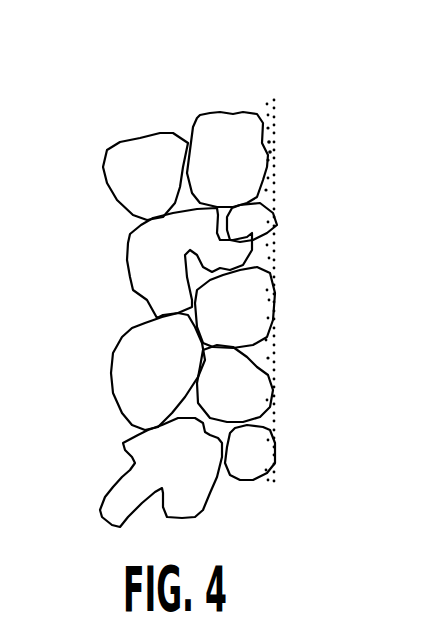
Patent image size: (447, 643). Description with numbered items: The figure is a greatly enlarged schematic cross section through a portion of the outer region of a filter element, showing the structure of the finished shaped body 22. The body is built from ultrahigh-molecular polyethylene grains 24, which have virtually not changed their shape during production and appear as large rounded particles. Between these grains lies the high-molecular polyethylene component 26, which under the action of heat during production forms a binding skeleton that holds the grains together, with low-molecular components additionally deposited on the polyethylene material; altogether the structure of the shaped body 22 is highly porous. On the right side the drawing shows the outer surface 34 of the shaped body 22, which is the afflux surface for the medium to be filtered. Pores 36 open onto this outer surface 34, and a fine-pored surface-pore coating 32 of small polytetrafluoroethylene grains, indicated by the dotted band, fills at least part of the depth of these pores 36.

The shaped body 22 is at (192, 82).
The ultrahigh-molecular polyethylene grains 24 is at (117, 168).
The high-molecular polyethylene component 26 is at (145, 265).
The surface-pore coating 32 is at (258, 197).
The outer surface 34 is at (278, 162).
The pores 36 is at (248, 357).